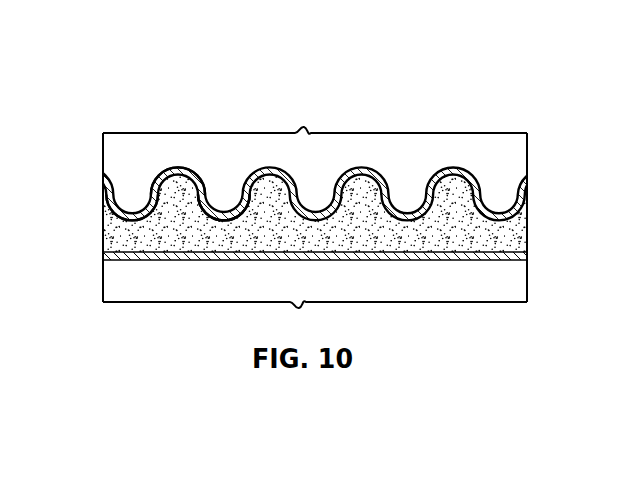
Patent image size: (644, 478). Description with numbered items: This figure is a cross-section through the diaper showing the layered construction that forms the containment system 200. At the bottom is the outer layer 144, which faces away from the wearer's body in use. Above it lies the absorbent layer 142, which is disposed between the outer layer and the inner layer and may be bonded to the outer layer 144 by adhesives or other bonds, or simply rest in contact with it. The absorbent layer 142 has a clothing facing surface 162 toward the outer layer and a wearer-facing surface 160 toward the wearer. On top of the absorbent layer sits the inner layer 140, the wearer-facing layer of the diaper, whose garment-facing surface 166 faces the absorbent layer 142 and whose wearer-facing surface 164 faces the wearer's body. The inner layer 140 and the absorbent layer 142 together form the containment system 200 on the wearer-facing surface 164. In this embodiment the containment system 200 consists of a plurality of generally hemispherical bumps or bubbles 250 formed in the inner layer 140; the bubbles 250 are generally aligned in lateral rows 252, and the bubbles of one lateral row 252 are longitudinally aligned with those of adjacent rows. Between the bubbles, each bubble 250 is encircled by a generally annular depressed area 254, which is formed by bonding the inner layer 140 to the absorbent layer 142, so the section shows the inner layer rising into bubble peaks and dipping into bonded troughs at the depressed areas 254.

The containment system 200 is at (132, 35).
The inner layer 140 is at (106, 179).
The absorbent layer 142 is at (518, 232).
The outer layer 144 is at (510, 262).
The wearer-facing surface 160 is at (222, 231).
The clothing facing surface 162 is at (170, 242).
The wearer-facing surface 164 is at (183, 159).
The garment-facing surface 166 is at (124, 230).
The bubbles 250 is at (245, 192).
The lateral rows 252 is at (521, 201).
The annular depressed area 254 is at (225, 212).